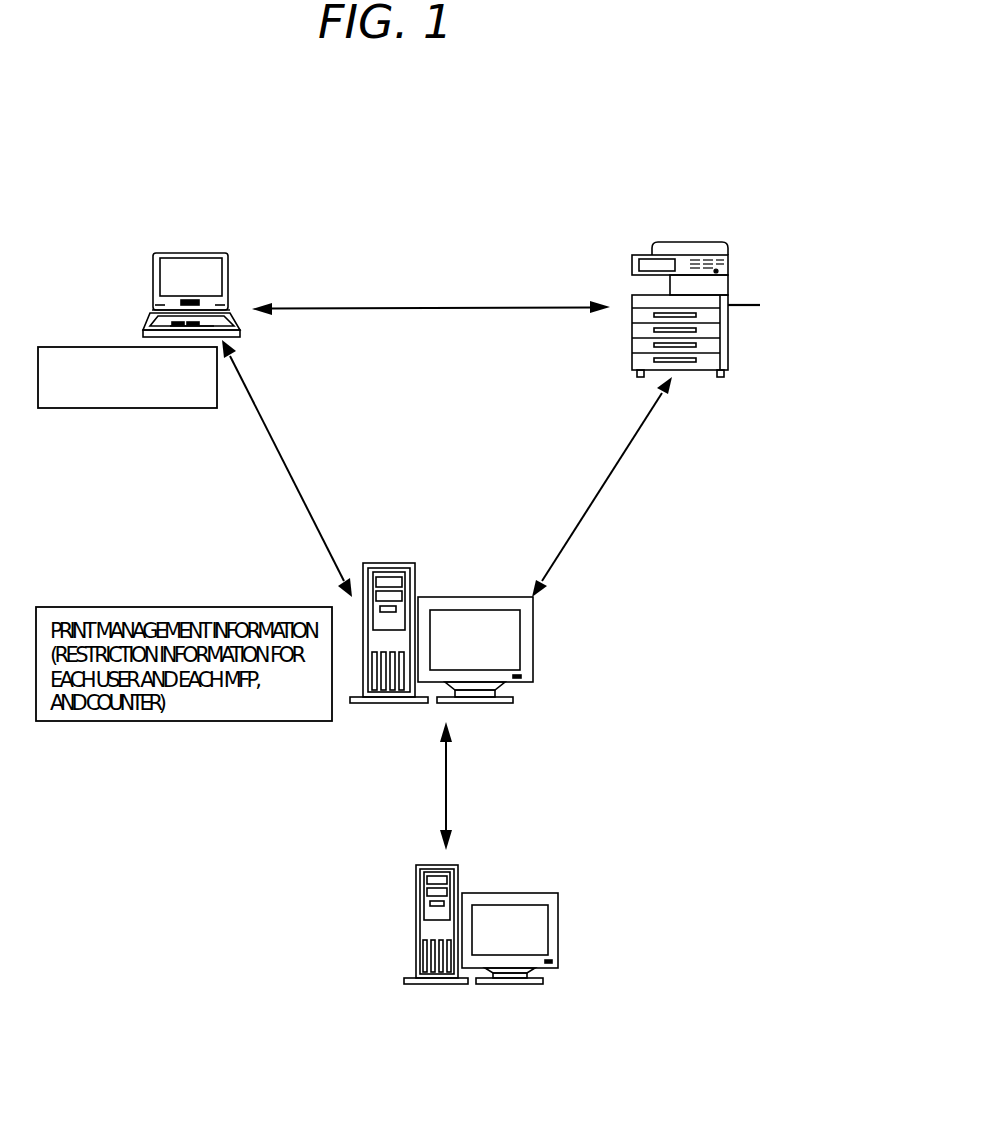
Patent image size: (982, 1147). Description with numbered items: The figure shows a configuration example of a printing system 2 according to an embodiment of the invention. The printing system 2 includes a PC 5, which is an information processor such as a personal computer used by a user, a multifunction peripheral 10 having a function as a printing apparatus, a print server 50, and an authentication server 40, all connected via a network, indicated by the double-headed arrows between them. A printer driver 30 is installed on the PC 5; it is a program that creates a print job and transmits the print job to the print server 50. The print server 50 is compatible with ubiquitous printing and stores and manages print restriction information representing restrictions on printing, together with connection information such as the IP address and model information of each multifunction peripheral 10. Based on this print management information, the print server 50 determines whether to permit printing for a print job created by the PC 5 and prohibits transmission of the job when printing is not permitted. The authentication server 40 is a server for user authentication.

The printing system 2 is at (542, 126).
The PC 5 is at (170, 253).
The multifunction peripheral 10 is at (683, 242).
The printer driver 30 is at (86, 347).
The authentication server 40 is at (418, 948).
The print server 50 is at (393, 563).